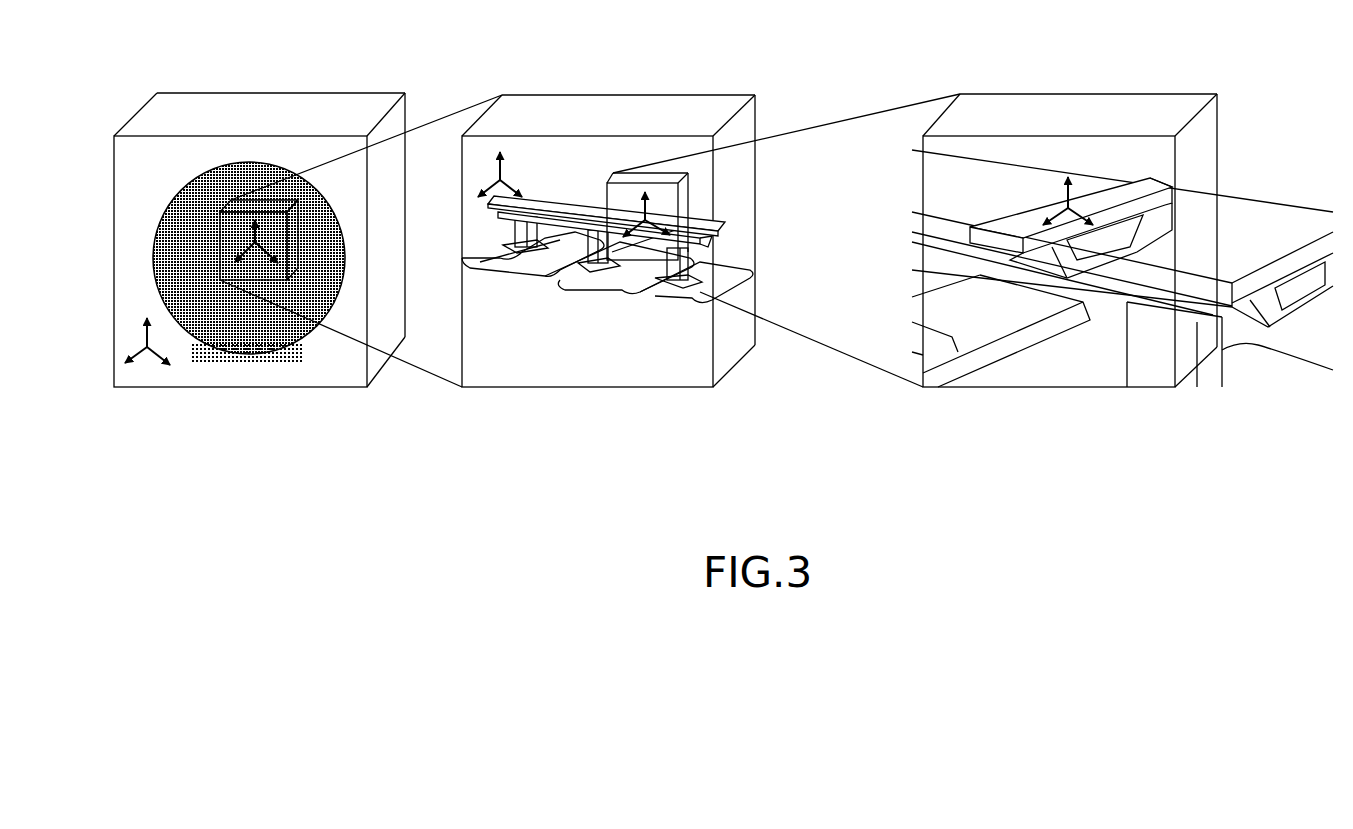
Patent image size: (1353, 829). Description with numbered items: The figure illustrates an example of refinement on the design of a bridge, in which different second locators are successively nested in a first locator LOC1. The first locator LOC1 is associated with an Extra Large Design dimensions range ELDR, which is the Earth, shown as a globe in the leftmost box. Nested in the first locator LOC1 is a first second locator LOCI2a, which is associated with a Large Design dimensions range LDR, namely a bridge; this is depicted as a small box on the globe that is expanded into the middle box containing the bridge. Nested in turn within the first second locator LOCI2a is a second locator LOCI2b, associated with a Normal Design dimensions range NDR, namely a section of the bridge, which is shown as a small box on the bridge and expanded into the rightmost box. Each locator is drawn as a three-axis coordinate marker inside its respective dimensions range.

The first locator LOC1 is at (160, 352).
The first second locator LOCI2a is at (292, 228).
The second locator LOCI2b is at (665, 232).
The Extra Large Design dimensions range ELDR is at (303, 387).
The Large Design dimensions range LDR is at (265, 280).
The Normal Design dimensions range NDR is at (688, 188).